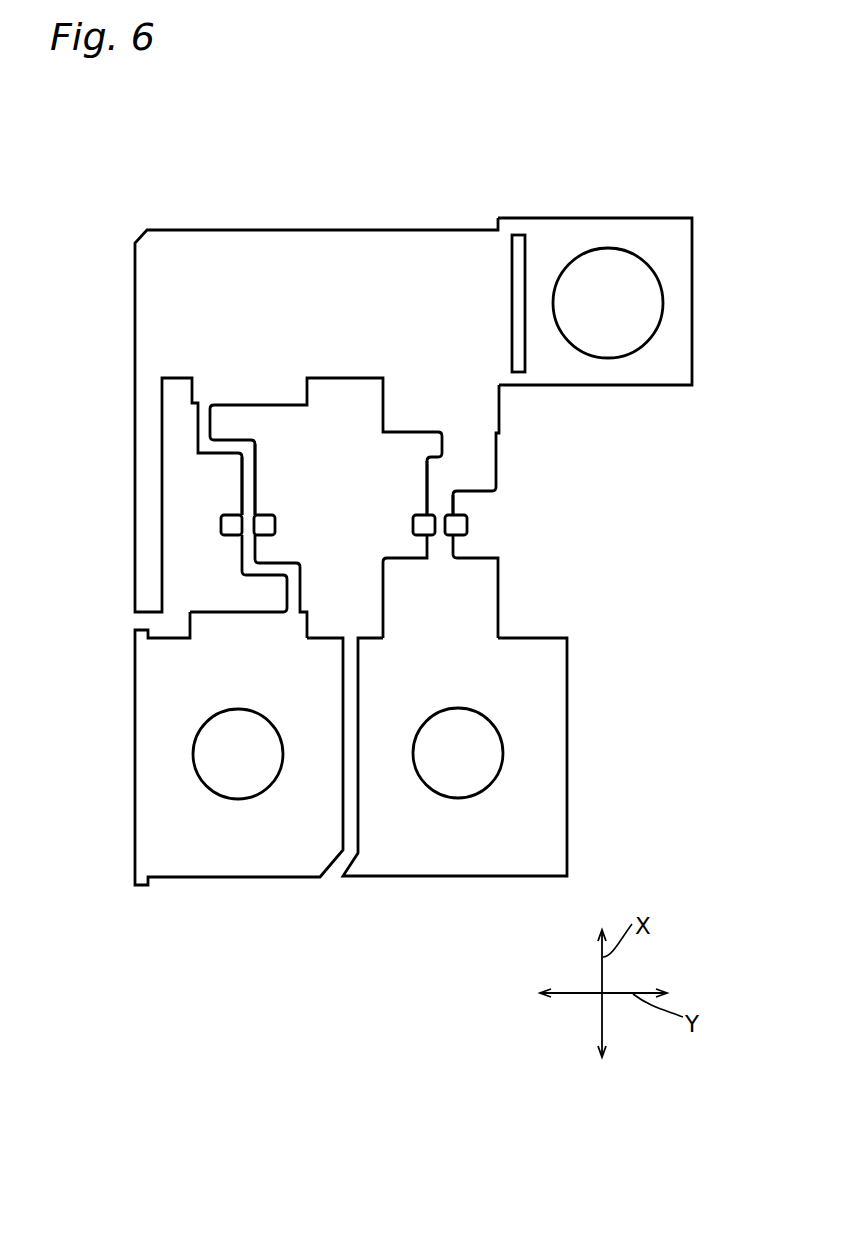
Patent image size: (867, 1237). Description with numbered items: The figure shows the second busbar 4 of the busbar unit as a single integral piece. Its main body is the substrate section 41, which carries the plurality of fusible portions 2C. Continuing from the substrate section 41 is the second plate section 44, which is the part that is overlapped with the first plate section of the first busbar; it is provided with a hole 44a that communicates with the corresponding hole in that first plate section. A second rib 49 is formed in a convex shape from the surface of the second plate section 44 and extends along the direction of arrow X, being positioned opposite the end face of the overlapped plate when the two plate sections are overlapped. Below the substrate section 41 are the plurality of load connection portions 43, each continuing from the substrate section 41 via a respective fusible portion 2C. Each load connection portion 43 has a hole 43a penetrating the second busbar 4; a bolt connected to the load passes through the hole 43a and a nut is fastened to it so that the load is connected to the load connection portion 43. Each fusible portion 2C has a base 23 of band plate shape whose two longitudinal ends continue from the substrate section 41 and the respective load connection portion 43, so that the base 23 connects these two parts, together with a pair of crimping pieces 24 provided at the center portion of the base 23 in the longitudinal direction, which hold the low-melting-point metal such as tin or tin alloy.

The second busbar 4 is at (564, 161).
The substrate section 41 is at (338, 243).
The second plate section 44 is at (675, 273).
The hole 44a is at (646, 313).
The second rib 49 is at (517, 280).
The load connection portion 43 is at (273, 852).
The hole 43a is at (237, 781).
The base 23 is at (246, 497).
The crimping pieces 24 is at (268, 528).
The fusible portion 2C is at (285, 520).